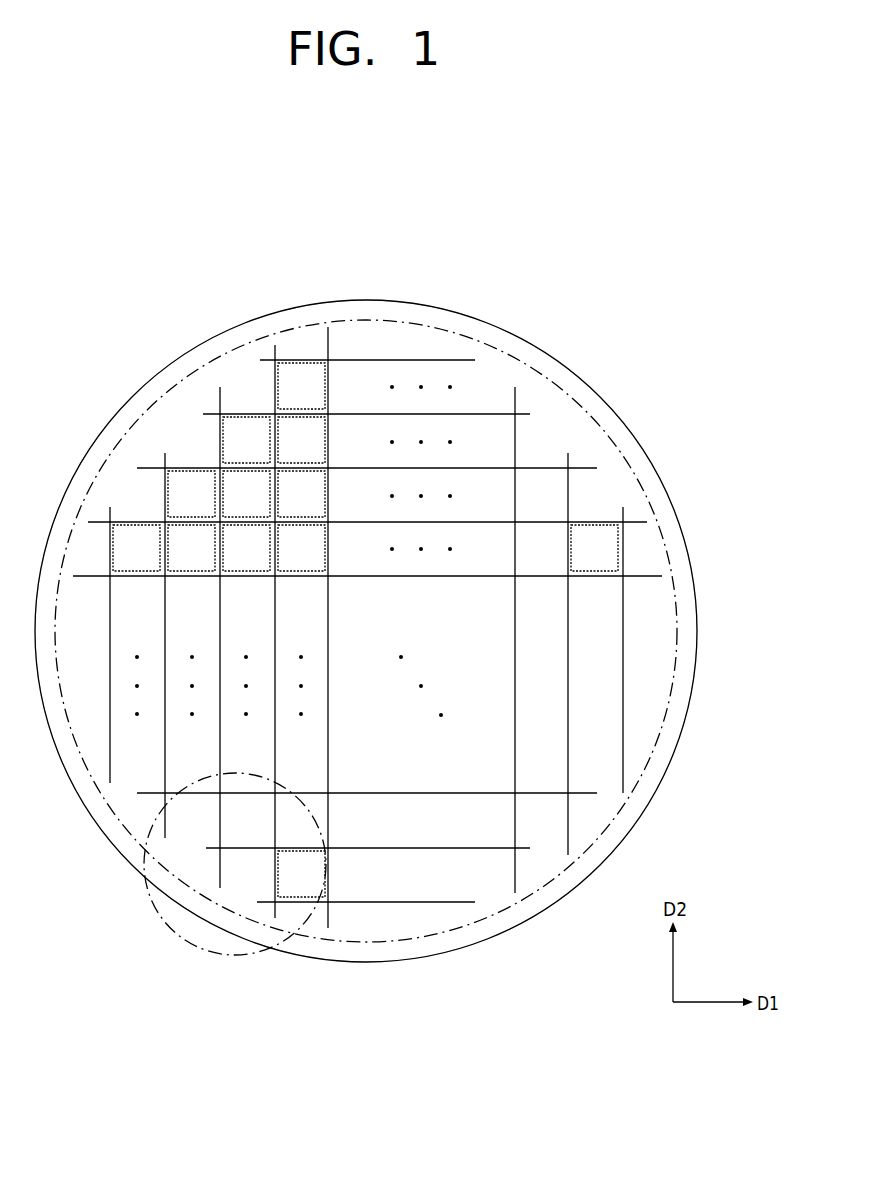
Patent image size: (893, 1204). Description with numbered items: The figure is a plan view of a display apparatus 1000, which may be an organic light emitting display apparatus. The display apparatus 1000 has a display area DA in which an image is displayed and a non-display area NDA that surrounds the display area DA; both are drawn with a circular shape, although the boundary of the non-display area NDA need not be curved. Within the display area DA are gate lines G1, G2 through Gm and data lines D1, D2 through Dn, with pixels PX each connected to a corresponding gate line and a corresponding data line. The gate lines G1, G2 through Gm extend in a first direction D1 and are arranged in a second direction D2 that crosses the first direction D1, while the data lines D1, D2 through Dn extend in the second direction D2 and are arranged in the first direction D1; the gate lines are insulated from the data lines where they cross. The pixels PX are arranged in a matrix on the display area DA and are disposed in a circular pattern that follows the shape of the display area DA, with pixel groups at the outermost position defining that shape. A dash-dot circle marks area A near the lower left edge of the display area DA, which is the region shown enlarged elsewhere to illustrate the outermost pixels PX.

The display apparatus 1000 is at (568, 288).
The non-display area NDA is at (678, 535).
The display area DA is at (668, 563).
The area A is at (153, 906).
The pixel PX is at (365, 630).
The gate line G1 is at (352, 361).
The gate line G2 is at (353, 415).
The gate line Gm is at (352, 903).
The first direction D1 is at (109, 635).
The second direction D2 is at (164, 635).
The data line Dn is at (622, 639).